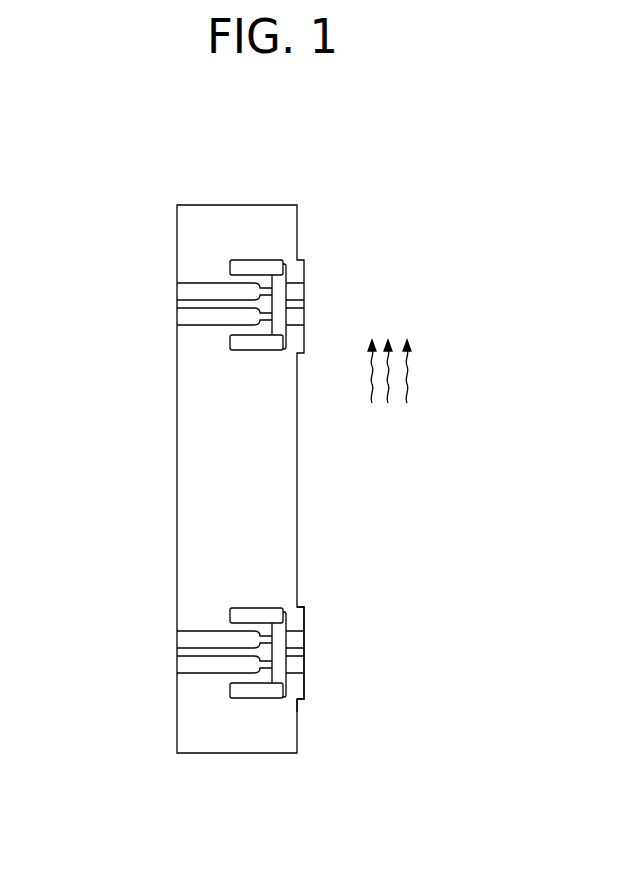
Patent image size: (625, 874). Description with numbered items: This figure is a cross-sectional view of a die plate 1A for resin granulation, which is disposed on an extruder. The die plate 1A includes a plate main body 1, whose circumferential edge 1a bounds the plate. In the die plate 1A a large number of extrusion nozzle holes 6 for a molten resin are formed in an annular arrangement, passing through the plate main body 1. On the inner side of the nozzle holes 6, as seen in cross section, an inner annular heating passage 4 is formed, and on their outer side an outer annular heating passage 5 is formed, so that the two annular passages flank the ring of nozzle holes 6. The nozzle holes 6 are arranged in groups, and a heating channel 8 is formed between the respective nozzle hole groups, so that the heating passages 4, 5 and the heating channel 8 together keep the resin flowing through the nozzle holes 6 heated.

The plate main body 1 is at (208, 733).
The die plate 1A is at (317, 608).
The circumferential edge 1a is at (287, 703).
The inner annular heating passage 4 is at (246, 475).
The outer annular heating passage 5 is at (279, 258).
The extrusion nozzle hole 6 is at (177, 640).
The heating channel 8 is at (279, 288).